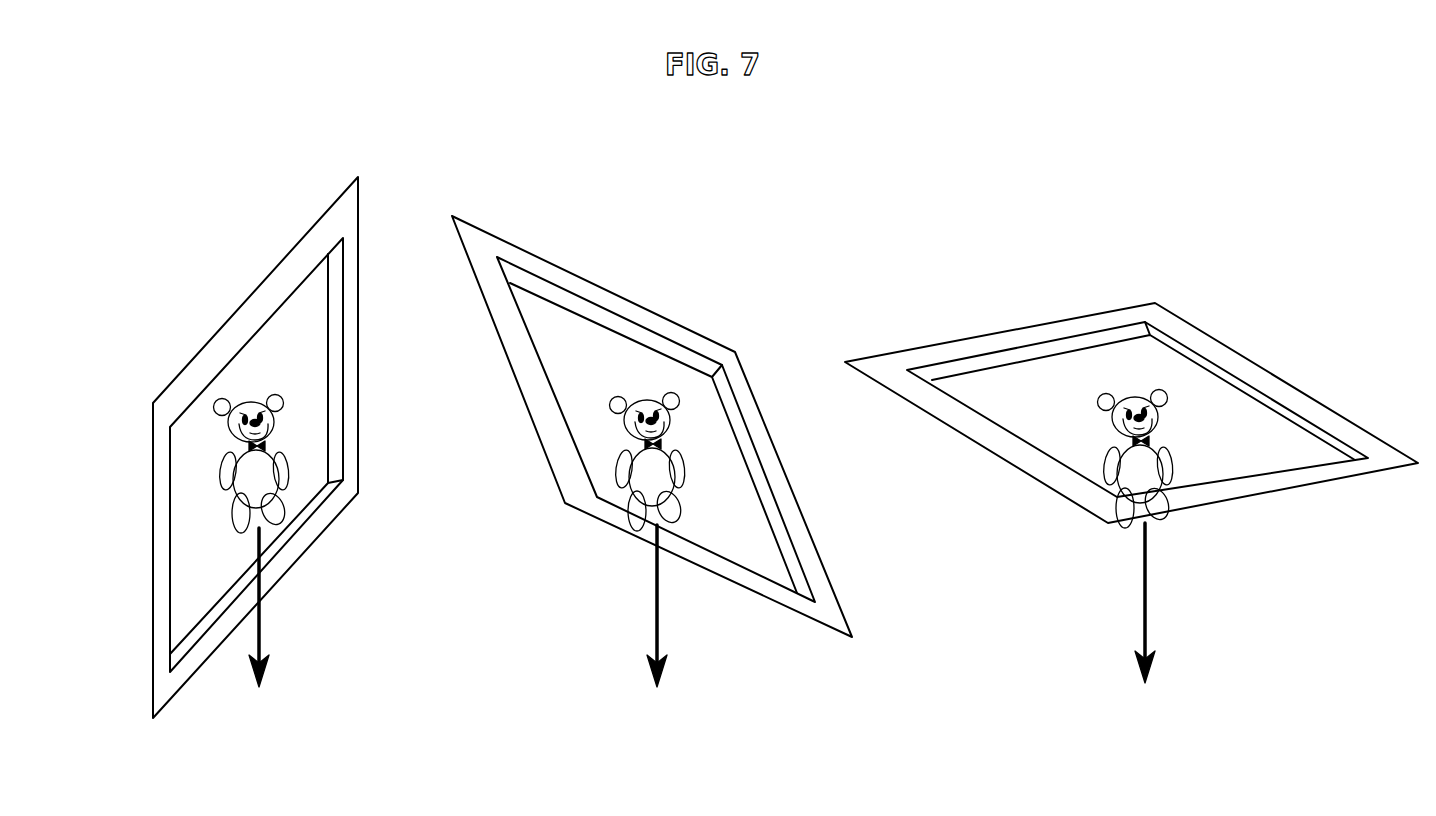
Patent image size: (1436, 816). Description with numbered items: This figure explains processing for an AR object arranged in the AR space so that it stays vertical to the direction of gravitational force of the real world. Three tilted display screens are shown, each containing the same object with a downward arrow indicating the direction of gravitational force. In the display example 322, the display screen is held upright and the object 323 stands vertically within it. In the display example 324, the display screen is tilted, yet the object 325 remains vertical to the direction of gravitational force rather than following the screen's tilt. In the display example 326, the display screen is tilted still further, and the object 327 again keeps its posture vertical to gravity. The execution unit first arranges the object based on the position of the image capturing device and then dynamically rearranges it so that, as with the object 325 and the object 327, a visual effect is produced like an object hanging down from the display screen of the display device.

The display panel (first orientation) 322 is at (200, 226).
The displayed object image (bear) 323 is at (282, 473).
The display example 324 is at (732, 211).
The object 325 is at (683, 470).
The display example 326 is at (1245, 212).
The object 327 is at (1170, 463).